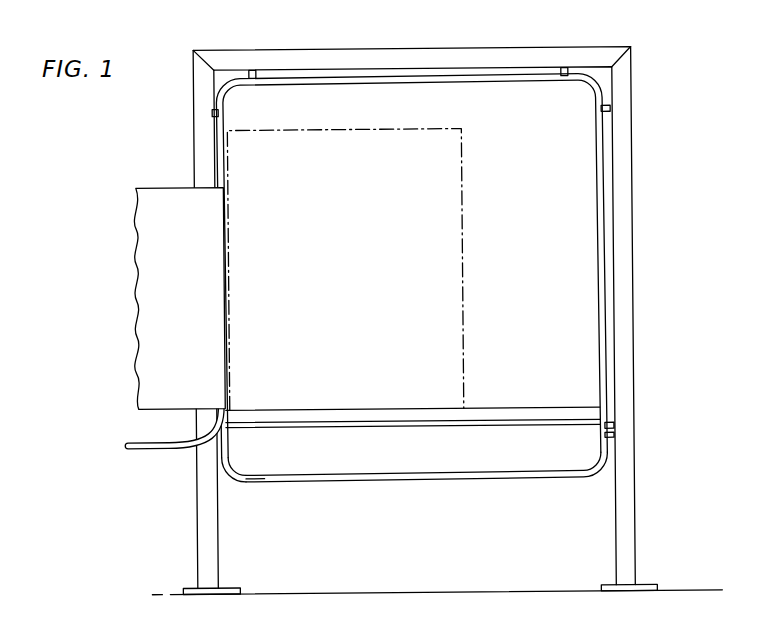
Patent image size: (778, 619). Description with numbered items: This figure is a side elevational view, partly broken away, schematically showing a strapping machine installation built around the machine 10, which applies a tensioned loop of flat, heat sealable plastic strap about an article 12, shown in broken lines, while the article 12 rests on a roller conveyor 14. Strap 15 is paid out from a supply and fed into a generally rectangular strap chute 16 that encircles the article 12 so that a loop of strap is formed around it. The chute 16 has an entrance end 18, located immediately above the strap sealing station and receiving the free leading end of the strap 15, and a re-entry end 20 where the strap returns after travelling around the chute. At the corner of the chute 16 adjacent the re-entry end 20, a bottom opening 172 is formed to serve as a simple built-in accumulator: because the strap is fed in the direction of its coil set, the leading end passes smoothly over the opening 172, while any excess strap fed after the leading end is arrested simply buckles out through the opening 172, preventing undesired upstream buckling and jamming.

The strapping machine 10 is at (151, 186).
The article 12 is at (464, 181).
The roller conveyor 14 is at (542, 410).
The strap 15 is at (110, 443).
The strap chute 16 is at (417, 72).
The entrance end 18 is at (221, 151).
The re-entry end 20 is at (234, 455).
The bottom opening 172 is at (263, 477).